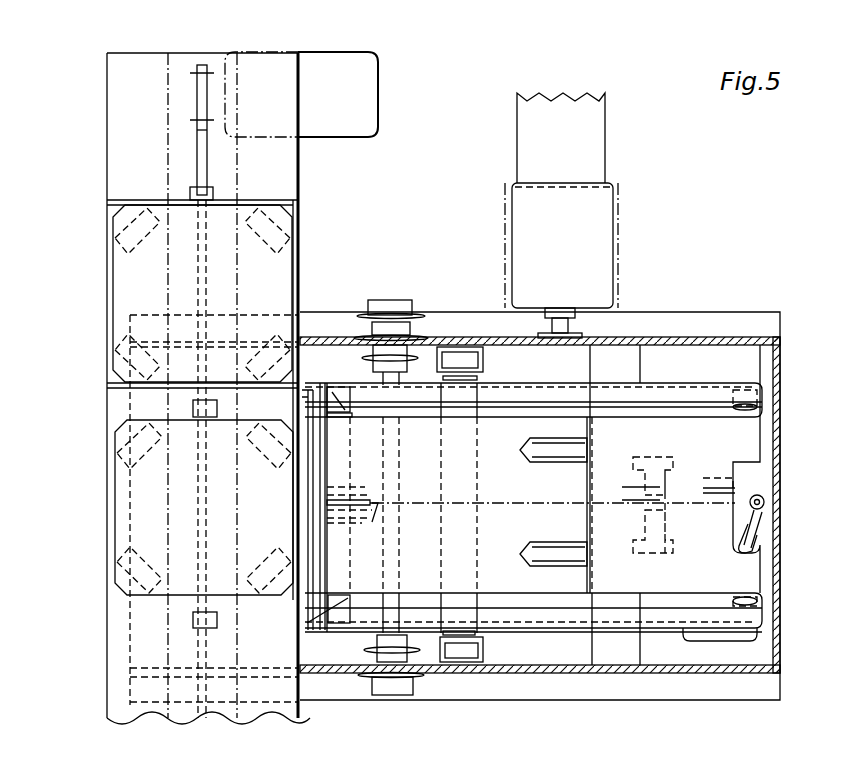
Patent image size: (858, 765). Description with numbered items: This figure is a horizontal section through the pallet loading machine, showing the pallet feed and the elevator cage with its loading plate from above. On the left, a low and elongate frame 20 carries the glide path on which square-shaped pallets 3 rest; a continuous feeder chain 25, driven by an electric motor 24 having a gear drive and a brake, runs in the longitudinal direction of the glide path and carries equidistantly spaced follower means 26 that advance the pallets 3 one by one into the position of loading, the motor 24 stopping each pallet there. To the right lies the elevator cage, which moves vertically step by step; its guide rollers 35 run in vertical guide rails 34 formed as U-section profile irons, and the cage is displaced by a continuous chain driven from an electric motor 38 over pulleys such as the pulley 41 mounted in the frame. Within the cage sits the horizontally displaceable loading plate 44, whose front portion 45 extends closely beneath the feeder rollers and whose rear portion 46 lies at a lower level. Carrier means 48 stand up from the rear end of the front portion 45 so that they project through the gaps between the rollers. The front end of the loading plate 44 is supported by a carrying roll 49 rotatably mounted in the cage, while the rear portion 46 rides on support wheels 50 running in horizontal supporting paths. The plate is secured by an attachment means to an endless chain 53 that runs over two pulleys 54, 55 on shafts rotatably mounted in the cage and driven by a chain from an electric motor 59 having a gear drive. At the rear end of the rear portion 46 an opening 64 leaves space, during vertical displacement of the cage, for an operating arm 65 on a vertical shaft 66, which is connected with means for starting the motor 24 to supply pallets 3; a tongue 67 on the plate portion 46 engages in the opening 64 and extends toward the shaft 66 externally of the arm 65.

The pallet 3 is at (140, 279).
The frame 20 is at (299, 243).
The electric motor 24 is at (349, 138).
The feeder chain 25 is at (199, 163).
The follower means 26 is at (190, 195).
The vertical guide rail 34 is at (484, 360).
The guide roller 35 is at (463, 352).
The electric motor 38 is at (598, 267).
The pulley 41 is at (420, 345).
The loading plate 44 is at (537, 415).
The front portion of the loading plate 45 is at (442, 472).
The rear portion of the loading plate 46 is at (708, 455).
The carrier means 48 is at (524, 451).
The carrying roll 49 is at (338, 388).
The support wheel 50 is at (760, 405).
The endless chain 53 is at (520, 507).
The pulley 54 is at (630, 505).
The pulley 55 is at (377, 508).
The electric motor 59 is at (745, 641).
The opening 64 is at (752, 532).
The operating arm 65 is at (766, 507).
The vertical shaft 66 is at (764, 498).
The tongue 67 is at (781, 515).